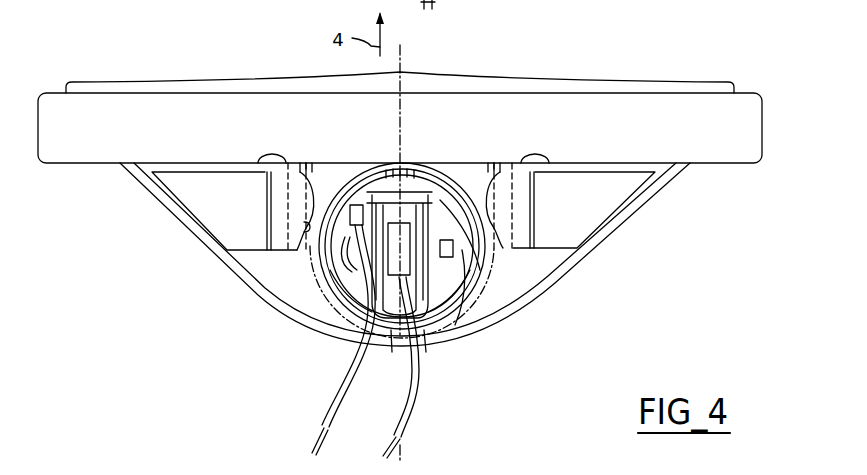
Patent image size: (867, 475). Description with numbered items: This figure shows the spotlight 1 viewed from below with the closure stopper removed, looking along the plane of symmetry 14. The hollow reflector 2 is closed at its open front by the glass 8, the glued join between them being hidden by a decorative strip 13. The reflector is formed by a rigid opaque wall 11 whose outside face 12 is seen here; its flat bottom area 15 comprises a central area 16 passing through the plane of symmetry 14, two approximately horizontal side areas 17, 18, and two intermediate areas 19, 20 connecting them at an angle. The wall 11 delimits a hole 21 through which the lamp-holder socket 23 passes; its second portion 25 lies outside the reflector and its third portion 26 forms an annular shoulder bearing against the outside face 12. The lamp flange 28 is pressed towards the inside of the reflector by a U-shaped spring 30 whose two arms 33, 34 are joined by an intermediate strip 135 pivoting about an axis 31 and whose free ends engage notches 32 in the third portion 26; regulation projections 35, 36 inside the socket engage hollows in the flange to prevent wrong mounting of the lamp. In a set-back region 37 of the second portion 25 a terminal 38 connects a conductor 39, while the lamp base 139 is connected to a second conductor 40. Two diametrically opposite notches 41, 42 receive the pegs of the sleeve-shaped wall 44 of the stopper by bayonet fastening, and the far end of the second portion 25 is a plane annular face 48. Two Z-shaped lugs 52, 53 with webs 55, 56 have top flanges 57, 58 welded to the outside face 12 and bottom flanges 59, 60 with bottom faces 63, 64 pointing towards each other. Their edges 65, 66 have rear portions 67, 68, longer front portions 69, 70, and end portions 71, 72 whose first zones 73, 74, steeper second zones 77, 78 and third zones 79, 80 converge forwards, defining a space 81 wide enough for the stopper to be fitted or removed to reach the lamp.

The spotlight 1 is at (551, 52).
The reflector 2 is at (157, 212).
The glass 8 is at (628, 78).
The wall 11 is at (678, 190).
The outside face 12 is at (608, 255).
The decorative strip 13 is at (742, 115).
The plane of symmetry 14 is at (402, 452).
The bottom area 15 is at (513, 340).
The central area 16 is at (478, 340).
The side area 17 is at (238, 283).
The side area 18 is at (575, 282).
The intermediate area 19 is at (296, 335).
The intermediate area 20 is at (530, 318).
The hole 21 is at (398, 350).
The lamp-holder socket 23 is at (433, 362).
The second portion 25 is at (350, 350).
The third portion 26 is at (330, 335).
The flange 28 is at (425, 190).
The spring 30 is at (428, 236).
The axis 31 is at (442, 338).
The notches 32 is at (402, 190).
The arm 33 is at (393, 234).
The arm 34 is at (454, 210).
The regulation projection 35 is at (362, 316).
The socket recess 36 is at (468, 272).
The region 37 is at (352, 180).
The terminal 38 is at (367, 207).
The conductor 39 is at (318, 428).
The second conductor 40 is at (418, 418).
The notch 41 is at (293, 314).
The notch 42 is at (492, 238).
The sleeve-shaped wall 44 is at (368, 180).
The plane annular face 48 is at (384, 188).
The lug 52 is at (228, 180).
The lug 53 is at (583, 170).
The web 55 is at (260, 212).
The web 56 is at (525, 198).
The top flange 57 is at (217, 238).
The top flange 58 is at (632, 225).
The bottom flange 59 is at (300, 175).
The bottom flange 60 is at (535, 163).
The bottom face 63 is at (262, 185).
The bottom face 64 is at (540, 178).
The edge 65 is at (275, 305).
The edge 66 is at (568, 285).
The rear portion 67 is at (277, 252).
The rear portion 68 is at (518, 254).
The front portion 69 is at (318, 185).
The front portion 70 is at (500, 185).
The end portion 71 is at (298, 252).
The end portion 72 is at (540, 298).
The first zone 73 is at (304, 236).
The first zone 74 is at (500, 230).
The second zone 77 is at (304, 214).
The second zone 78 is at (518, 184).
The third zone 79 is at (326, 190).
The third zone 80 is at (478, 168).
The space 81 is at (452, 338).
The intermediate strip 135 is at (360, 358).
The base 139 is at (438, 205).